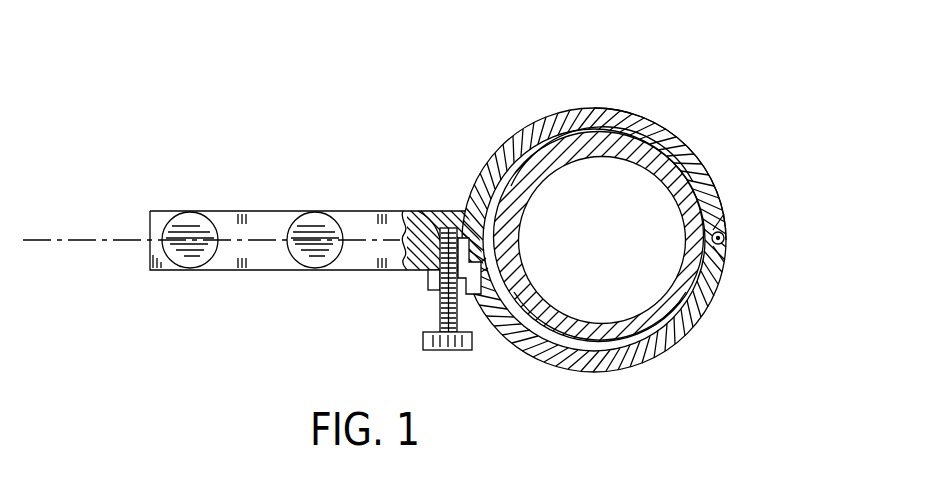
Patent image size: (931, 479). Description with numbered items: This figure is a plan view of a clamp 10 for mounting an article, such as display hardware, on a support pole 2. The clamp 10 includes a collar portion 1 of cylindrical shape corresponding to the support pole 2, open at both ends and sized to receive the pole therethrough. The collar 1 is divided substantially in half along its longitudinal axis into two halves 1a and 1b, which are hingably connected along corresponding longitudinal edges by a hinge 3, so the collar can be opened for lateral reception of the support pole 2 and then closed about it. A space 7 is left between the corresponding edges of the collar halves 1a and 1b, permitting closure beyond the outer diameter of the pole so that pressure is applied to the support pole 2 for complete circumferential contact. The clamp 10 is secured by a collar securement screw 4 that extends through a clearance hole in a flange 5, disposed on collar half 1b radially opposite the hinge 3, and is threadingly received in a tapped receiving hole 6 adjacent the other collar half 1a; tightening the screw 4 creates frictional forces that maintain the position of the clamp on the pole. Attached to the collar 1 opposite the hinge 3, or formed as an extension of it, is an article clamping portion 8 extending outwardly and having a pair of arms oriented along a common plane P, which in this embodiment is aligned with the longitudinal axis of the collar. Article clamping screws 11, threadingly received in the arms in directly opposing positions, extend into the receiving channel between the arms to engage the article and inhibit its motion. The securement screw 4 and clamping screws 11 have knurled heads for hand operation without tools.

The collar portion 1 is at (687, 240).
The collar half 1a is at (730, 172).
The collar half 1b is at (642, 302).
The support pole 2 is at (585, 138).
The hinge 3 is at (724, 236).
The collar securement screw 4 is at (440, 315).
The flange 5 is at (428, 285).
The tapped receiving hole 6 is at (422, 211).
The space 7 is at (482, 262).
The article clamping portion 8 is at (245, 211).
The clamp 10 is at (745, 130).
The article clamping screws 11 is at (313, 262).
The common plane P is at (87, 242).